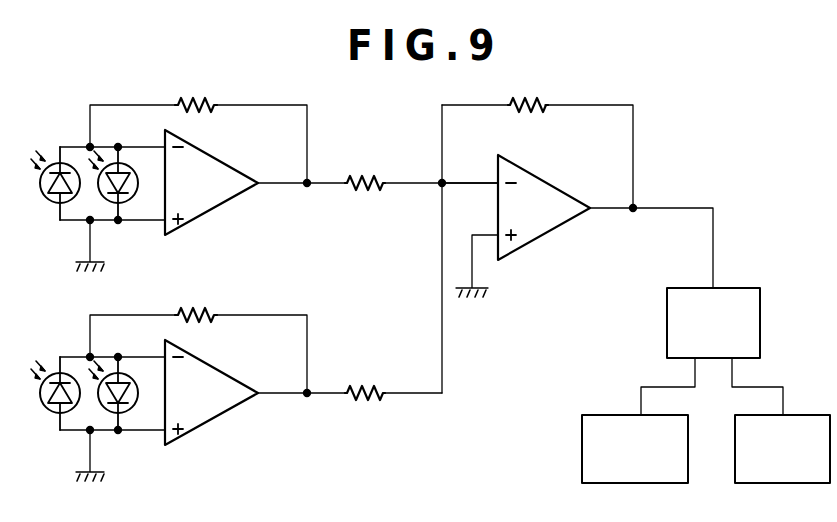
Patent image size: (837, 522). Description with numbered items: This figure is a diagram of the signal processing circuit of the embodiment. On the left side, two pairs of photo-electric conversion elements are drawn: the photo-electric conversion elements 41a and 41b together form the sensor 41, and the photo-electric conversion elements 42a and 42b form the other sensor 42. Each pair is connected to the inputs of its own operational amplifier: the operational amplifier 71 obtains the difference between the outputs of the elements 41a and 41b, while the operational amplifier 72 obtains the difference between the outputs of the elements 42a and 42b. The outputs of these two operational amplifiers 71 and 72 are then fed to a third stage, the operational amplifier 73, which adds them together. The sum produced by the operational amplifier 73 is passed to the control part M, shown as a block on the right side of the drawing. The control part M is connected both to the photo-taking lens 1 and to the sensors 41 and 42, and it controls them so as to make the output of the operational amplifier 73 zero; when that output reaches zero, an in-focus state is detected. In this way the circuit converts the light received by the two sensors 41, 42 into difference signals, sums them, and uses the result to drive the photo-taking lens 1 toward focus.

The photo-electric conversion element 41a is at (132, 165).
The photo-electric conversion element 41b is at (46, 201).
The photo-electric conversion element 42a is at (46, 411).
The photo-electric conversion element 42b is at (132, 375).
The operational amplifier 71 is at (213, 153).
The operational amplifier 72 is at (213, 363).
The operational amplifier 73 is at (545, 181).
The control part M is at (735, 288).
The photo-taking lens 1 is at (613, 415).
The sensor 41 is at (812, 415).
The sensor 42 is at (782, 449).